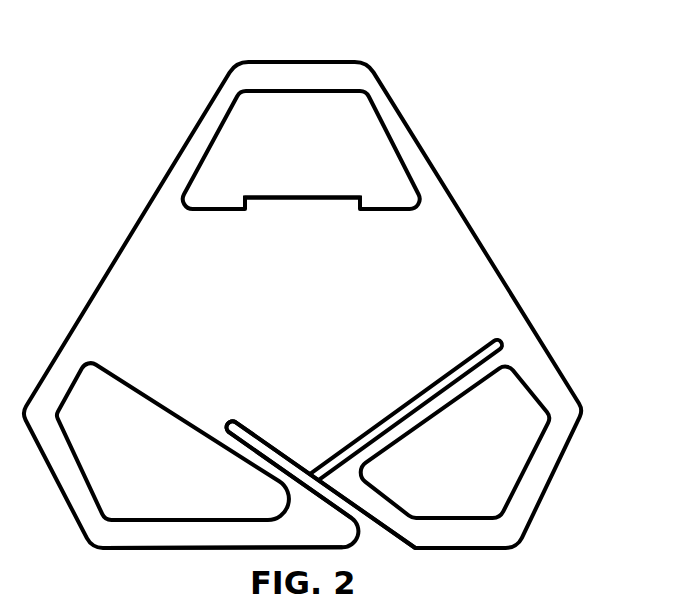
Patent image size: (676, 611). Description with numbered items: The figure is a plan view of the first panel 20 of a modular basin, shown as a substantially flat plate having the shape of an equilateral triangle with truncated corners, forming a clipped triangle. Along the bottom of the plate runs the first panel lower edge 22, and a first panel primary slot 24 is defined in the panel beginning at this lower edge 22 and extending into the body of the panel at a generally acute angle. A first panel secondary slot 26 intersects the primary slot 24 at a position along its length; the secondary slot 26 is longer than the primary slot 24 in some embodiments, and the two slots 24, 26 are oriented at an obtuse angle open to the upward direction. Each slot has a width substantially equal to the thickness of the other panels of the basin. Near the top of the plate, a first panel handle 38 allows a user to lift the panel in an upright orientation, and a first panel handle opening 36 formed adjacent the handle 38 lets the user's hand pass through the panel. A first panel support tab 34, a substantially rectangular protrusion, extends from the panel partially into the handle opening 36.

The first panel 20 is at (517, 210).
The first panel lower edge 22 is at (227, 549).
The first panel primary slot 24 is at (277, 450).
The first panel secondary slot 26 is at (380, 421).
The first panel support tab 34 is at (288, 196).
The first panel handle opening 36 is at (355, 153).
The first panel handle 38 is at (287, 60).